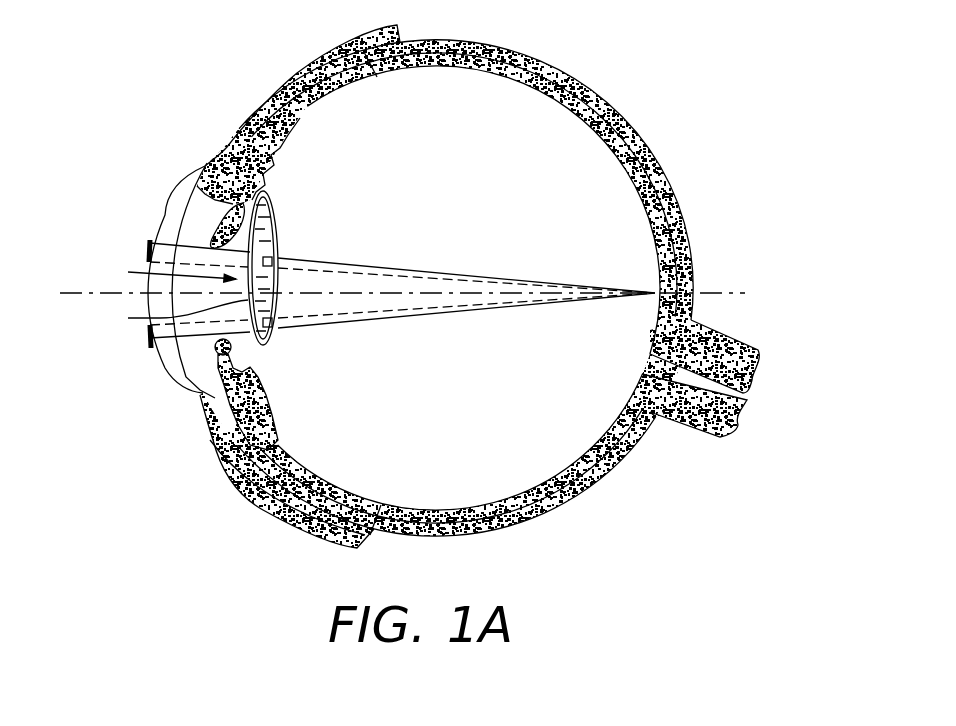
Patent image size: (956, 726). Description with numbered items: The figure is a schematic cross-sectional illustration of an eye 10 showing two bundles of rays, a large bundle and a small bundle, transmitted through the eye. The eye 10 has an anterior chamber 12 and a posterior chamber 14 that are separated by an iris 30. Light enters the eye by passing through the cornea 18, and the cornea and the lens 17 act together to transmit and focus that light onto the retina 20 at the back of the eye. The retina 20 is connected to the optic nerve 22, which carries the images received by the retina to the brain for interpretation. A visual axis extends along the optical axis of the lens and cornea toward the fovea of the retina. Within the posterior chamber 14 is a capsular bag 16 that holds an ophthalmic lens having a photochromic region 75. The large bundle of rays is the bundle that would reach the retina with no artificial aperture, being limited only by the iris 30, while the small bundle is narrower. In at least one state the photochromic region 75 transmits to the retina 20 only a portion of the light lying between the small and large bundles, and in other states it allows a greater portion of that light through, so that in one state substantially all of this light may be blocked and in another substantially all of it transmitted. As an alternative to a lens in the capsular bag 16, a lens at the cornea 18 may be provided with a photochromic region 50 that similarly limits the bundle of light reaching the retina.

The eye 10 is at (588, 43).
The anterior chamber 12 is at (212, 237).
The posterior chamber 14 is at (168, 275).
The capsular bag 16 is at (280, 222).
The lens 17 is at (174, 316).
The cornea 18 is at (216, 352).
The retina 20 is at (650, 348).
The optic nerve 22 is at (715, 325).
The iris 30 is at (202, 236).
The photochromic region 50 is at (150, 243).
The photochromic region 75 is at (278, 258).